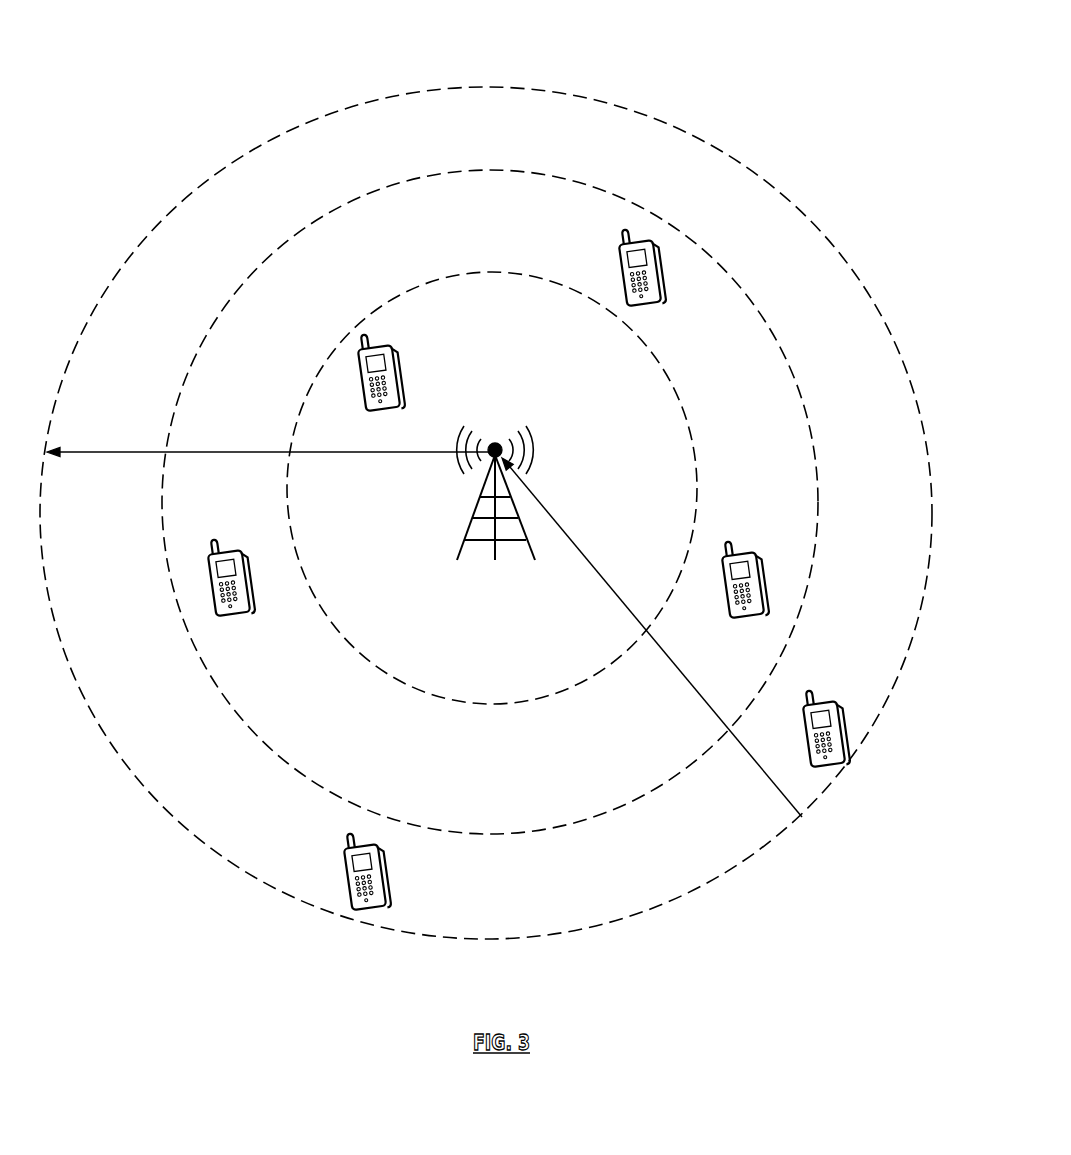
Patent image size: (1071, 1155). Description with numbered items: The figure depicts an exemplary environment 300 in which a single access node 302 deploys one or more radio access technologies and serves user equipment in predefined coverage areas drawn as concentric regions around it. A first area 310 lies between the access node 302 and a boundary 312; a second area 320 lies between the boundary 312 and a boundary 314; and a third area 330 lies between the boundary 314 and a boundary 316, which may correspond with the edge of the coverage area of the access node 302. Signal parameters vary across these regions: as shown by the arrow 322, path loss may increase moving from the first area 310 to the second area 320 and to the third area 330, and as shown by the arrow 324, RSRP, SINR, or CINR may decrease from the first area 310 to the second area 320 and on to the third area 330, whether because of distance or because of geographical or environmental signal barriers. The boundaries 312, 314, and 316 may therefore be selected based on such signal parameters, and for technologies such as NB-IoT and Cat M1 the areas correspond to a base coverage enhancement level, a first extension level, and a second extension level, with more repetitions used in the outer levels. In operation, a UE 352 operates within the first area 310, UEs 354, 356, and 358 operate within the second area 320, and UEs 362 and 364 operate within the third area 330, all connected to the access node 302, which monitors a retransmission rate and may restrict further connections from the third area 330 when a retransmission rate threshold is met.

The environment 300 is at (598, 60).
The access node 302 is at (496, 481).
The first area 310 is at (492, 488).
The boundary 312 is at (570, 295).
The boundary 314 is at (808, 420).
The boundary 316 is at (930, 498).
The second area 320 is at (490, 502).
The arrow 322 is at (388, 453).
The arrow 324 is at (703, 698).
The third area 330 is at (486, 513).
The UE 352 is at (393, 345).
The UE 354 is at (620, 250).
The UE 356 is at (730, 613).
The UE 358 is at (240, 618).
The UE 362 is at (345, 853).
The UE 364 is at (810, 693).